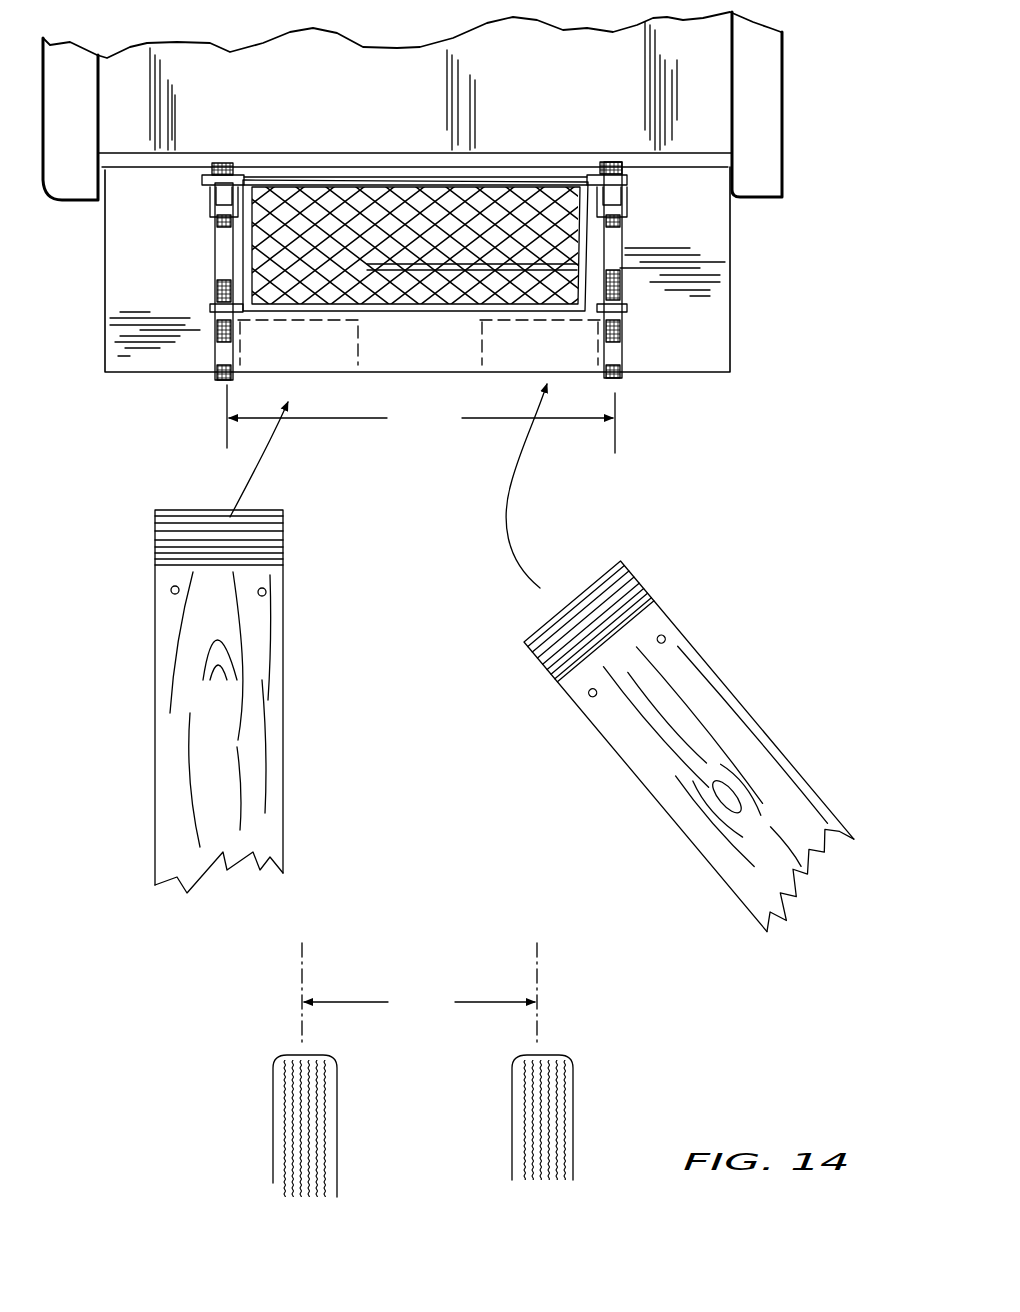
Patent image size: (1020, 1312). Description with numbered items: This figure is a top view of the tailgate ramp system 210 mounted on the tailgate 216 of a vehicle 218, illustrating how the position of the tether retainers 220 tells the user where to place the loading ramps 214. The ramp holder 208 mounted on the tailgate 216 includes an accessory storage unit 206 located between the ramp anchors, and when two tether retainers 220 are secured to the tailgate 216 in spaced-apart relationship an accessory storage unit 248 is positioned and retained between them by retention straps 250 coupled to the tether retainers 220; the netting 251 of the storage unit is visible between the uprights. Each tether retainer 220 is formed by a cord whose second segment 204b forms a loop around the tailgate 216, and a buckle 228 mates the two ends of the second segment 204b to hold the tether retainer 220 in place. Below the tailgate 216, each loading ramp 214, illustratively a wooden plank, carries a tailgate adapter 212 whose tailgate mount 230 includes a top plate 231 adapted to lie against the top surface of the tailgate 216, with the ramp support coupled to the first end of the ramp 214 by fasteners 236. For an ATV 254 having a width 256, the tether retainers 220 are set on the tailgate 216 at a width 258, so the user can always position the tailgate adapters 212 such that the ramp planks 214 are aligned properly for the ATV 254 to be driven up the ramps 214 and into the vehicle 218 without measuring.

The second segment 204b is at (220, 357).
The accessory storage unit 206 is at (402, 184).
The ramp holder 208 is at (330, 176).
The tailgate ramp system 210 is at (642, 402).
The tailgate adapter 212 is at (148, 551).
The loading ramp 214 is at (160, 730).
The tailgate 216 is at (737, 348).
The vehicle 218 is at (786, 160).
The tether retainer 220 is at (222, 256).
The buckle 228 is at (213, 205).
The tailgate mount 230 is at (265, 535).
The top plate 231 is at (157, 530).
The fasteners 236 is at (259, 606).
The accessory storage unit 248 is at (435, 310).
The retention straps 250 is at (203, 180).
The netting 251 is at (500, 208).
The ATV 254 is at (589, 1099).
The width 256 is at (419, 994).
The width 258 is at (421, 419).